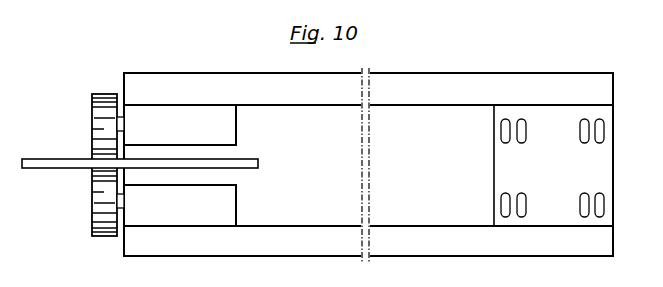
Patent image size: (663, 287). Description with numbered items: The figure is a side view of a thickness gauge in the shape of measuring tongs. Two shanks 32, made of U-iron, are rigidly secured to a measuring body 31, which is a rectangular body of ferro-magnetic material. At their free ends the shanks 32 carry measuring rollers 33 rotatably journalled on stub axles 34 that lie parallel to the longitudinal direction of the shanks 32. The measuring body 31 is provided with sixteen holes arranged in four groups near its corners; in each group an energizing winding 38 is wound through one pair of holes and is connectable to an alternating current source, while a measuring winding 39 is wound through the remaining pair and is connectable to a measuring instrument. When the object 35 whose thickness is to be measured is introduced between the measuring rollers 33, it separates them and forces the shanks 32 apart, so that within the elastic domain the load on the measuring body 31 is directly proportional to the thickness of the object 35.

The measuring body 31 is at (497, 170).
The shanks 32 is at (330, 103).
The measuring rollers 33 is at (92, 124).
The stub axles 34 is at (123, 127).
The object 35 is at (262, 164).
The energizing winding 38 is at (501, 132).
The measuring winding 39 is at (582, 144).